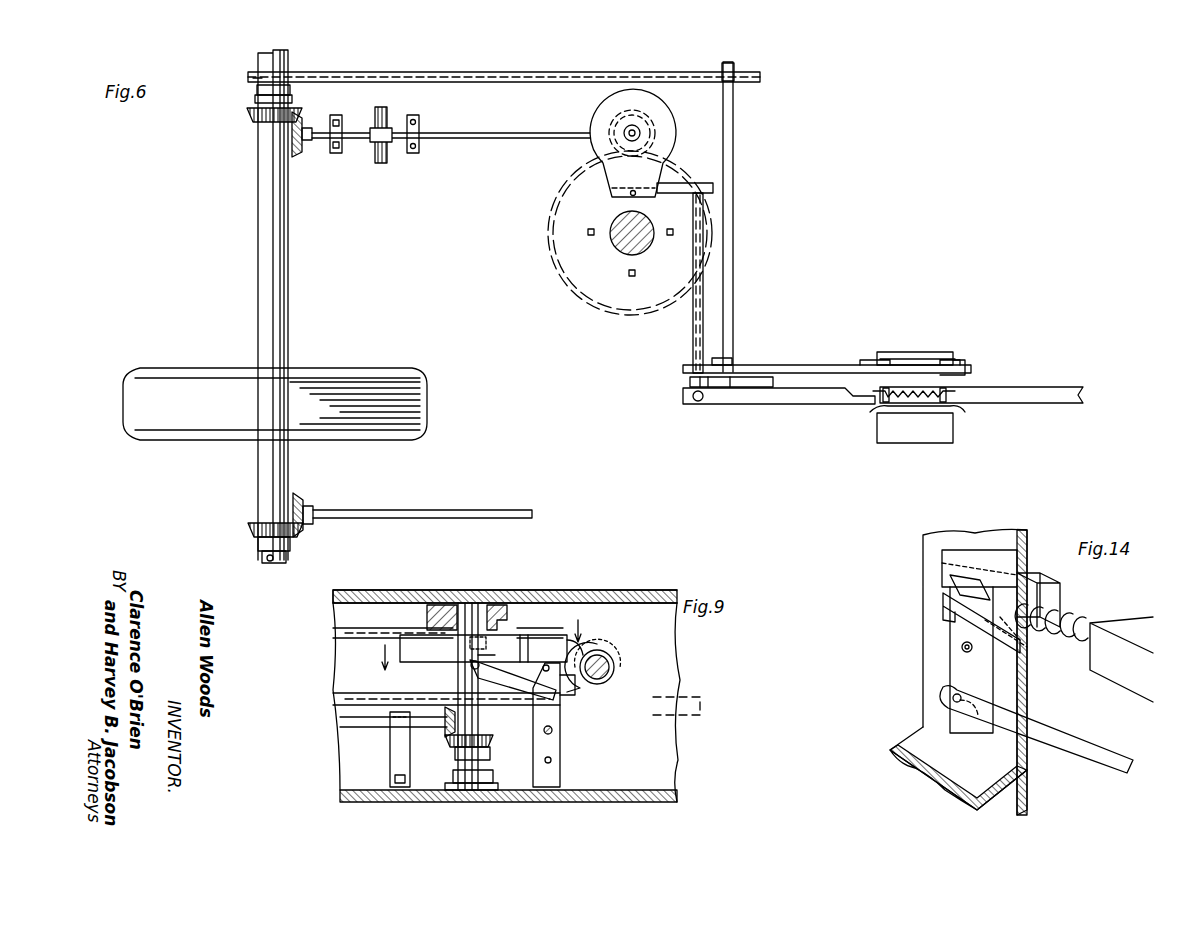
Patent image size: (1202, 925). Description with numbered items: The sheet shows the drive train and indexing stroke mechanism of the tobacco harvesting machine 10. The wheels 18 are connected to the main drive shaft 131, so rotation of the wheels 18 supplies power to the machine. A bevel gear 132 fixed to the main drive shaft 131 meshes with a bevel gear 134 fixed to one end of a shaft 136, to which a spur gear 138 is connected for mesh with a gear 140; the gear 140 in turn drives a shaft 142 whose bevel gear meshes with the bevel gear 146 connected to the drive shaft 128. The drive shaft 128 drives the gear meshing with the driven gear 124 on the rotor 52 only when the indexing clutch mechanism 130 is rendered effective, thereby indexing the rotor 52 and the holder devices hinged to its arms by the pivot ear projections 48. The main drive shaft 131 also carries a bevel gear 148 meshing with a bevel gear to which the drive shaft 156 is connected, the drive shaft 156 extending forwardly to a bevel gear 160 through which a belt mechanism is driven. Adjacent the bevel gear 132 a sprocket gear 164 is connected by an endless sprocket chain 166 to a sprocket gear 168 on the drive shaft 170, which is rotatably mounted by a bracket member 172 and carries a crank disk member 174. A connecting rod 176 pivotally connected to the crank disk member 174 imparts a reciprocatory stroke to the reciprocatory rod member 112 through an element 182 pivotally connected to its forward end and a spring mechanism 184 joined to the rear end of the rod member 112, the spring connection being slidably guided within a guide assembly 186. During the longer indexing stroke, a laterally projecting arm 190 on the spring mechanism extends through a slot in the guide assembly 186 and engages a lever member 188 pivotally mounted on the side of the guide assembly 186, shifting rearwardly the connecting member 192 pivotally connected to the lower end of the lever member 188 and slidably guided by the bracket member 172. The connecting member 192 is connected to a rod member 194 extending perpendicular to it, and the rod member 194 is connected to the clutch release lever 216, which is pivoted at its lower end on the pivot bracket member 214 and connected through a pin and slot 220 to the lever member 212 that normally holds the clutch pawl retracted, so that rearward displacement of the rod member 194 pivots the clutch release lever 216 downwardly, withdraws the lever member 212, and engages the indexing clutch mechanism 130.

In FIG. 9, the tobacco harvesting machine 10 is at (527, 662).
In FIG. 6, the wheels 18 is at (386, 390).
In FIG. 9, the pivot ear projections 48 is at (472, 668).
In FIG. 6, the rotor 52 is at (622, 250).
In FIG. 6, the reciprocatory rod member 112 is at (1015, 388).
In FIG. 14, the reciprocatory rod member 112 is at (1038, 576).
In FIG. 9, the driven gear 124 is at (496, 612).
In FIG. 9, the drive shaft 128 is at (478, 722).
In FIG. 6, the indexing clutch mechanism 130 is at (667, 121).
In FIG. 9, the indexing clutch mechanism 130 is at (507, 648).
In FIG. 6, the main drive shaft 131 is at (278, 293).
In FIG. 6, the bevel gear 132 is at (250, 118).
In FIG. 6, the bevel gear 134 is at (298, 152).
In FIG. 6, the shaft 136 is at (347, 130).
In FIG. 6, the spur gear 138 is at (385, 125).
In FIG. 6, the gear 140 is at (383, 163).
In FIG. 6, the shaft 142 is at (473, 133).
In FIG. 9, the bevel gear 146 is at (444, 740).
In FIG. 6, the bevel gear 148 is at (253, 540).
In FIG. 6, the drive shaft 156 is at (466, 511).
In FIG. 9, the bevel gear 160 is at (610, 657).
In FIG. 6, the sprocket gear 164 is at (252, 77).
In FIG. 6, the endless sprocket chain 166 is at (562, 77).
In FIG. 9, the endless sprocket chain 166 is at (576, 641).
In FIG. 6, the sprocket gear 168 is at (760, 75).
In FIG. 6, the drive shaft 170 is at (735, 179).
In FIG. 6, the bracket member 172 is at (742, 368).
In FIG. 6, the crank disk member 174 is at (764, 377).
In FIG. 6, the connecting rod 176 is at (802, 395).
In FIG. 6, the element 182 is at (879, 392).
In FIG. 14, the element 182 is at (1118, 620).
In FIG. 6, the spring mechanism 184 is at (920, 391).
In FIG. 6, the guide assembly 186 is at (905, 415).
In FIG. 14, the guide assembly 186 is at (990, 545).
In FIG. 14, the lever member 188 is at (960, 668).
In FIG. 14, the laterally projecting arm 190 is at (1005, 605).
In FIG. 6, the connecting member 192 is at (827, 365).
In FIG. 14, the connecting member 192 is at (950, 568).
In FIG. 6, the rod member 194 is at (694, 300).
In FIG. 9, the rod member 194 is at (553, 730).
In FIG. 9, the lever member 212 is at (470, 678).
In FIG. 9, the pivot bracket member 214 is at (600, 690).
In FIG. 9, the clutch release lever 216 is at (553, 712).
In FIG. 9, the slot 220 is at (470, 700).